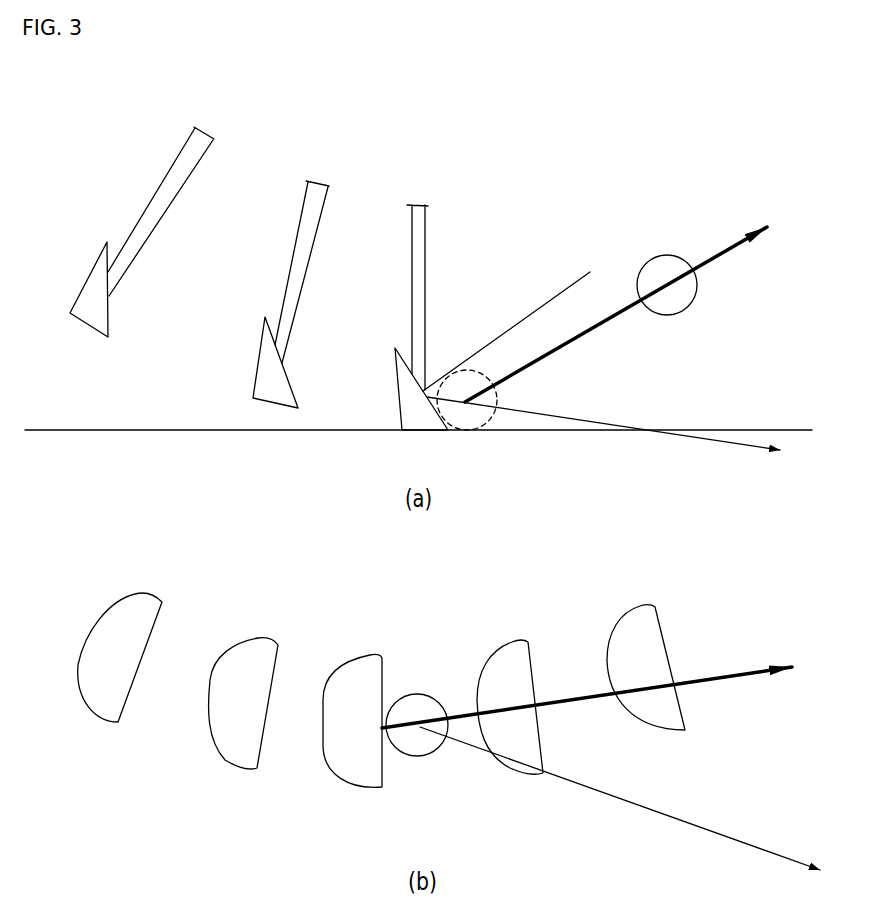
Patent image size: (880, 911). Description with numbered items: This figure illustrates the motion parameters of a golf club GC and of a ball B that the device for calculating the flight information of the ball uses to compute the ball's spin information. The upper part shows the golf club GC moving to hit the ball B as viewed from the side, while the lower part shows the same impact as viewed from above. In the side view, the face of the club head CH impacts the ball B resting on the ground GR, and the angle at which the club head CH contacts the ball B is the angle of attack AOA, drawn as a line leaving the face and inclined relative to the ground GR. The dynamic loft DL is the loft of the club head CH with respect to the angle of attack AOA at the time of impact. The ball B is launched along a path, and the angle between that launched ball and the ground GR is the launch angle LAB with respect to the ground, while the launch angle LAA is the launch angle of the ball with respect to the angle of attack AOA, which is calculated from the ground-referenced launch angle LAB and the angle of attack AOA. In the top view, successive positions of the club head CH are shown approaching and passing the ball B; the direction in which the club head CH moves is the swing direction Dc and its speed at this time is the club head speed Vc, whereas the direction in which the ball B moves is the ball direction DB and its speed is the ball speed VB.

The golf club GC is at (405, 328).
The club head CH is at (400, 405).
The ball B is at (495, 411).
The ground GR is at (435, 430).
The dynamic loft DL is at (532, 407).
The launch angle of the ball with respect to the angle of attack LAA is at (588, 330).
The launch angle of the ball with respect to the ground LAB is at (565, 430).
The angle of attack AOA is at (725, 415).
The club head speed Vc is at (587, 685).
The swing direction Dc is at (807, 665).
The ball speed VB is at (620, 798).
The ball direction DB is at (835, 875).